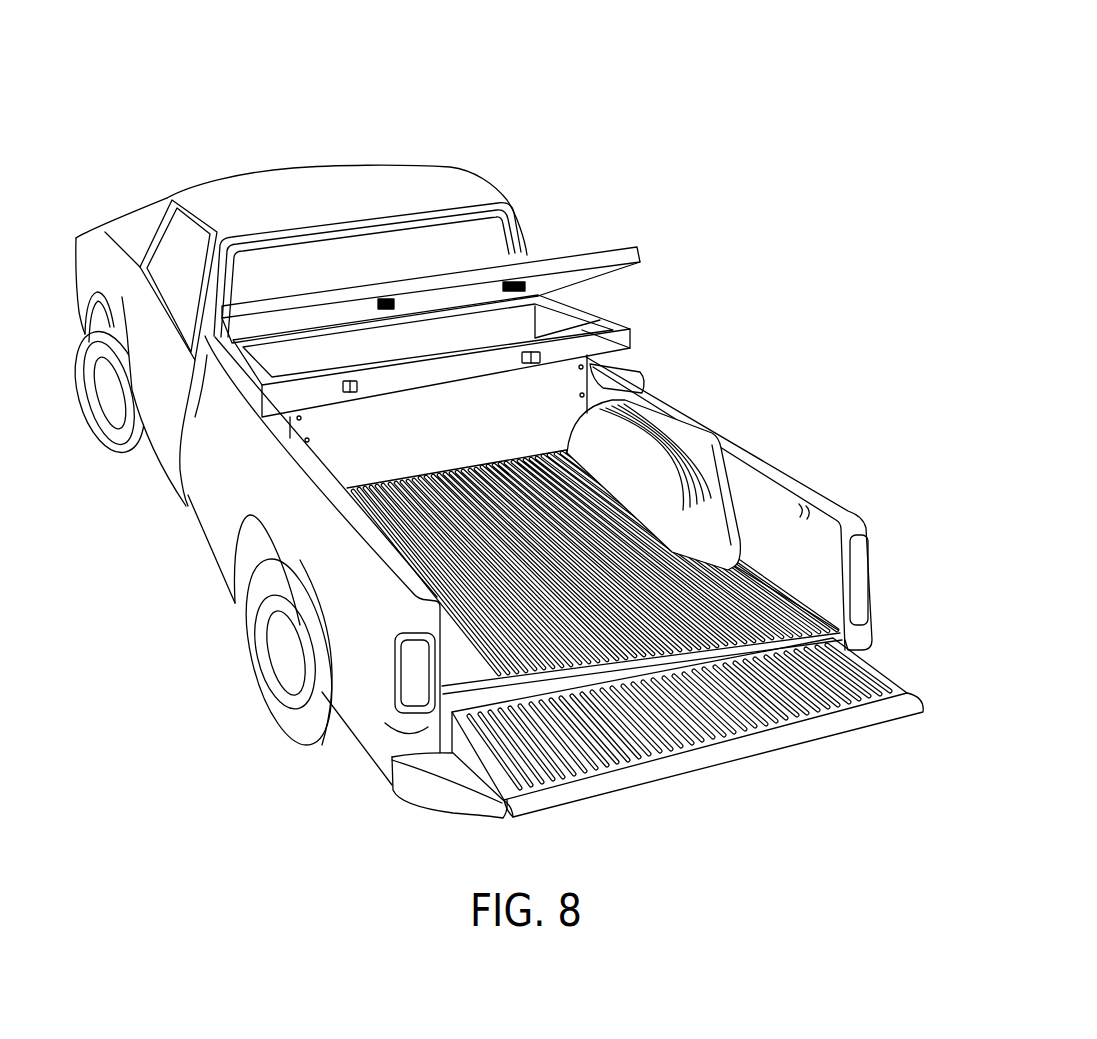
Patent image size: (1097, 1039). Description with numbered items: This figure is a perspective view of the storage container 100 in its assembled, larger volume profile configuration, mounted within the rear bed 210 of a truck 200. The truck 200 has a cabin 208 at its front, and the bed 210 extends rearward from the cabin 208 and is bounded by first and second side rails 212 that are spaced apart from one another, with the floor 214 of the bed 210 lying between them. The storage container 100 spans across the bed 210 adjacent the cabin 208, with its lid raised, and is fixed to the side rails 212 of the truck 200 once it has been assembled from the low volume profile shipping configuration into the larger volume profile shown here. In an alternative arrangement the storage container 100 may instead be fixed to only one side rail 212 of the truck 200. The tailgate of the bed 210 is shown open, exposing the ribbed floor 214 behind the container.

The truck 200 is at (636, 102).
The cab 208 is at (375, 163).
The storage container 100 is at (655, 249).
The bed 210 is at (733, 386).
The side rails 212 is at (287, 449).
The floor 214 is at (784, 607).